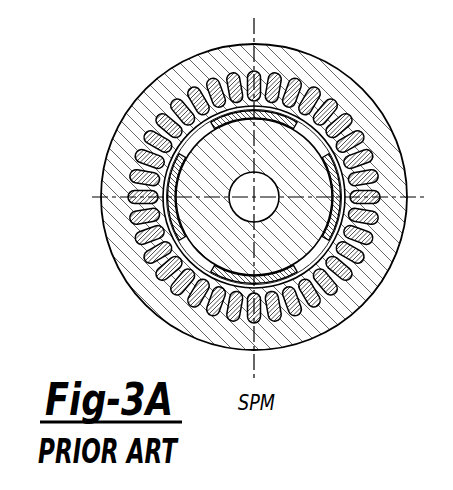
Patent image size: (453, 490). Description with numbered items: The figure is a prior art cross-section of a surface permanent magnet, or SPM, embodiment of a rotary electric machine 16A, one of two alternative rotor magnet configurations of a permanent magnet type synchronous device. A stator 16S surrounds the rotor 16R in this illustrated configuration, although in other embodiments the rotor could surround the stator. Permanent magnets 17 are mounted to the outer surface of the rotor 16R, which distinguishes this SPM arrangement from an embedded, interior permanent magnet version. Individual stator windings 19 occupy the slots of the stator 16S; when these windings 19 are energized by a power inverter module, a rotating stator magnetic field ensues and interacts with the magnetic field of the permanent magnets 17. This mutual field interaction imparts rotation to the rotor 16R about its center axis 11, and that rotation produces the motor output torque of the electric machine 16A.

The electric machine 16A is at (225, 245).
The stator 16S is at (332, 65).
The rotor 16R is at (254, 245).
The center axis 11 is at (252, 199).
The permanent magnets 17 is at (217, 277).
The stator windings 19 is at (295, 300).